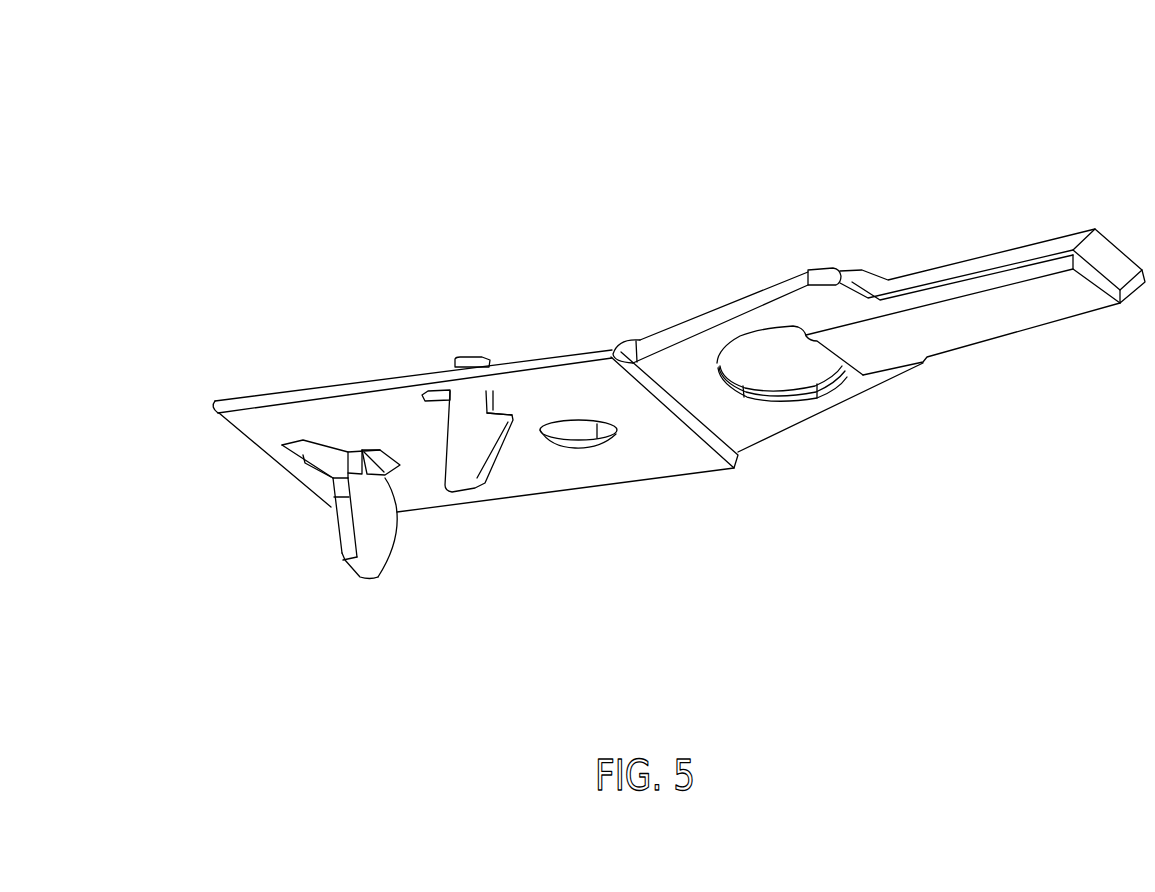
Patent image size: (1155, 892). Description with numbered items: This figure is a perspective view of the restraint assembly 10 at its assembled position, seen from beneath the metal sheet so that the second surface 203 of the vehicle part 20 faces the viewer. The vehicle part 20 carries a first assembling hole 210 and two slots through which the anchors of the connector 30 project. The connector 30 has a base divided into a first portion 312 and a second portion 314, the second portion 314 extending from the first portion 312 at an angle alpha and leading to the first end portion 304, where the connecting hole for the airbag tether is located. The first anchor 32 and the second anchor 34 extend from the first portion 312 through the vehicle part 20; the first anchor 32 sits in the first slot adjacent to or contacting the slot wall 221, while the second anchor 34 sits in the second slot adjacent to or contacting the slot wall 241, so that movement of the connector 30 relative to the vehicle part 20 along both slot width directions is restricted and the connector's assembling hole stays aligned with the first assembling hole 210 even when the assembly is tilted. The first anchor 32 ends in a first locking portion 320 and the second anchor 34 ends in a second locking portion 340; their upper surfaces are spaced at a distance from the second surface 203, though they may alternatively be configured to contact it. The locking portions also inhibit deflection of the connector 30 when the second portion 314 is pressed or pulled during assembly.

The restraint assembly 10 is at (791, 196).
The vehicle part 20 is at (323, 386).
The connector 30 is at (697, 321).
The first anchor 32 is at (338, 543).
The second anchor 34 is at (472, 357).
The second surface 203 is at (660, 458).
The first assembling hole 210 is at (573, 449).
The slot wall 221 is at (388, 476).
The slot wall 241 is at (504, 400).
The first end portion 304 is at (837, 293).
The first portion 312 is at (267, 427).
The second portion 314 is at (840, 397).
The first locking portion 320 is at (367, 507).
The second locking portion 340 is at (463, 458).